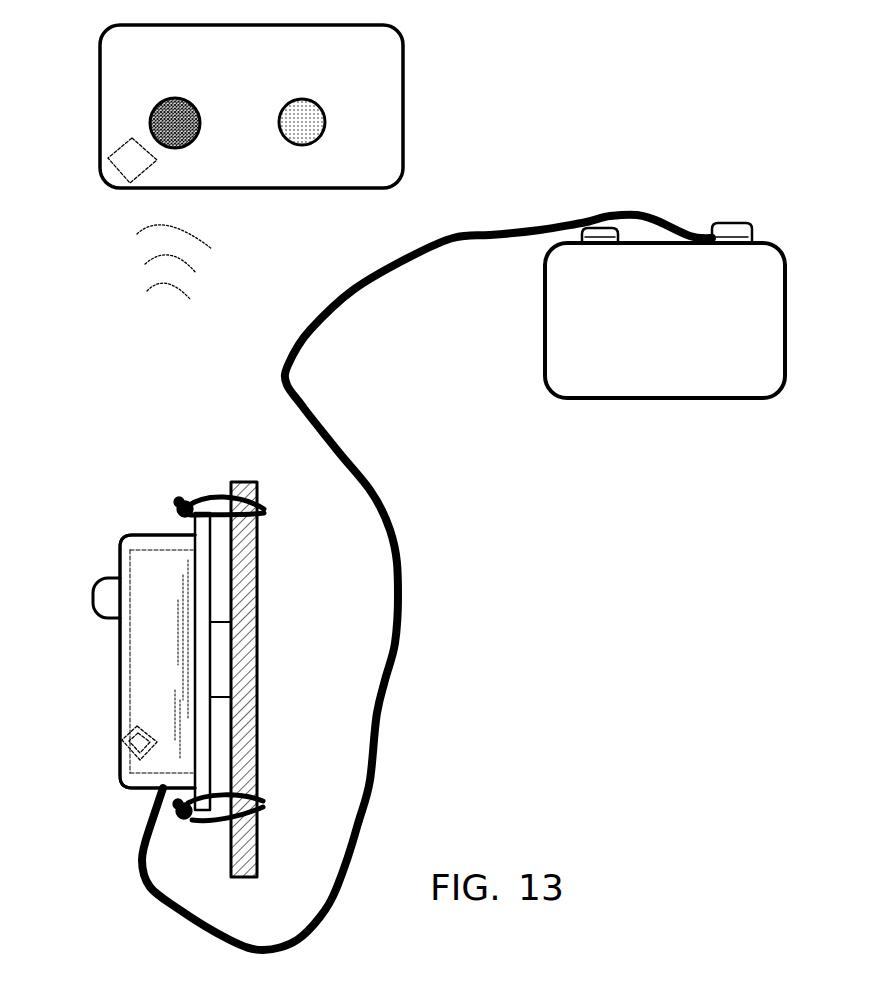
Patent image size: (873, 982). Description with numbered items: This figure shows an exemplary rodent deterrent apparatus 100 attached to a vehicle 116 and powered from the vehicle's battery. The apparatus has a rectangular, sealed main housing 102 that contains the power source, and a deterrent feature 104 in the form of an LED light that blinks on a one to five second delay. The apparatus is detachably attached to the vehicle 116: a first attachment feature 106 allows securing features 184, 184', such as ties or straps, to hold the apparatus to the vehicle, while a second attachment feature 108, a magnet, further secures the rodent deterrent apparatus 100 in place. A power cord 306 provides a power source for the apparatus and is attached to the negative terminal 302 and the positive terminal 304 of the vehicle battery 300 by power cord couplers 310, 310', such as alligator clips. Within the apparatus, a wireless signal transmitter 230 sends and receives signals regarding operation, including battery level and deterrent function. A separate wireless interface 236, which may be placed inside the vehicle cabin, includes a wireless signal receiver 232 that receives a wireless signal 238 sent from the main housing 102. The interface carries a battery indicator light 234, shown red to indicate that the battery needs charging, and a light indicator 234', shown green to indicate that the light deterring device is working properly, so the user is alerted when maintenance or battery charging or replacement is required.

The rodent deterrent apparatus 100 is at (109, 537).
The main housing 102 is at (119, 672).
The deterrent feature 104 is at (99, 597).
The first attachment feature 106 is at (196, 502).
The second attachment feature 108 is at (222, 660).
The vehicle 116 is at (256, 600).
The securing feature 184 is at (218, 501).
The securing feature 184' is at (267, 798).
The wireless signal transmitter 230 is at (126, 738).
The wireless signal receiver 232 is at (136, 164).
The battery indicator light 234 is at (195, 159).
The light indicator 234' is at (303, 162).
The wireless interface 236 is at (402, 94).
The wireless signal 238 is at (197, 276).
The vehicle battery 300 is at (603, 386).
The negative terminal 302 is at (590, 227).
The positive terminal 304 is at (747, 225).
The power cord 306 is at (403, 573).
The power cord coupler 310 is at (634, 227).
The power cord coupler 310' is at (735, 274).